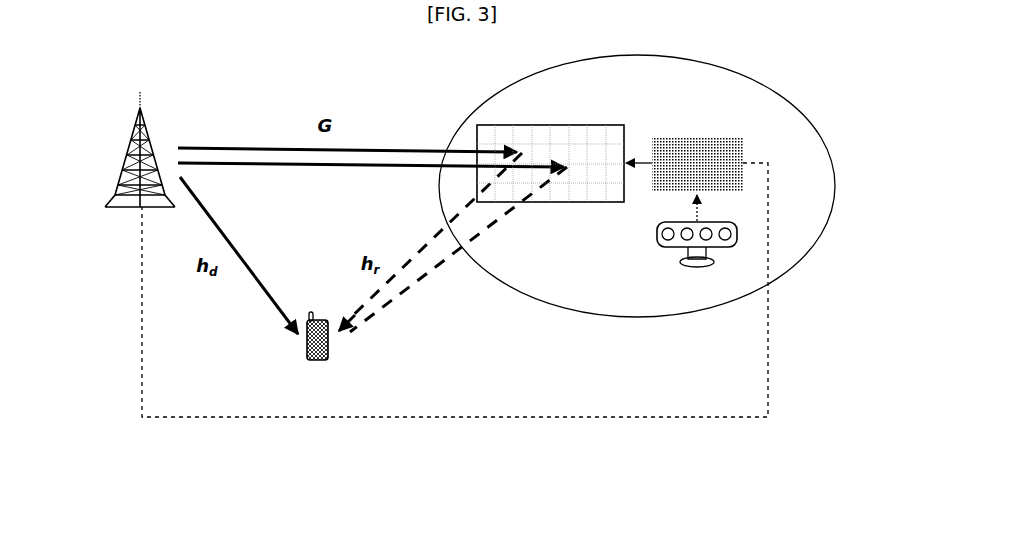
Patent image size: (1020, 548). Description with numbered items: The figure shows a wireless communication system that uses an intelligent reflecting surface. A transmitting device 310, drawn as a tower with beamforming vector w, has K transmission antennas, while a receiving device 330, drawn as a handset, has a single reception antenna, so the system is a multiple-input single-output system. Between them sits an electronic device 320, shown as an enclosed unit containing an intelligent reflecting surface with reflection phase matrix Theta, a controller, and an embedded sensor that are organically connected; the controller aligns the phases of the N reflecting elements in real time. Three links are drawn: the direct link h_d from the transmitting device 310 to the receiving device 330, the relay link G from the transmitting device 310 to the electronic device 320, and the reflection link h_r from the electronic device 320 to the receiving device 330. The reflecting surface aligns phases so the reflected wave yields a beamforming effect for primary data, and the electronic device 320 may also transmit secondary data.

The transmitting device 310 is at (106, 163).
The electronic device 320 is at (834, 190).
The receiving device 330 is at (320, 362).